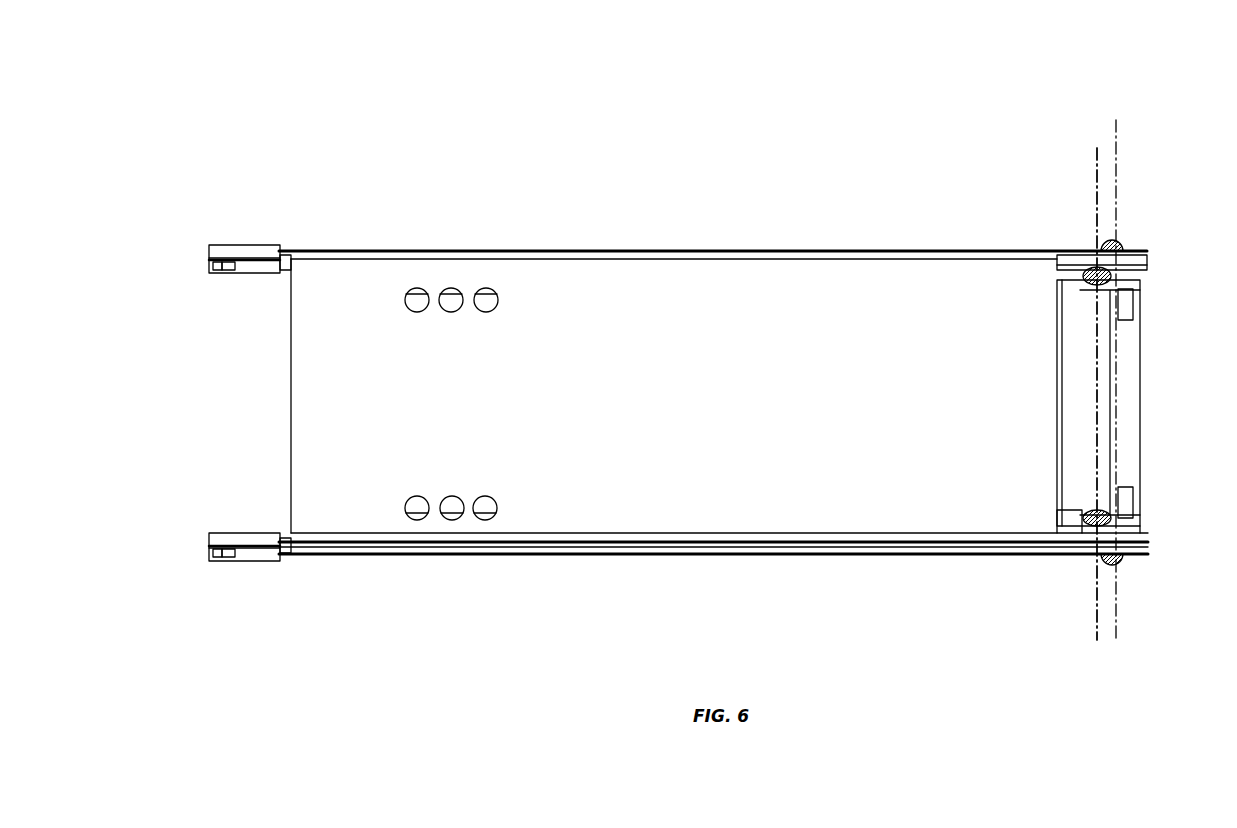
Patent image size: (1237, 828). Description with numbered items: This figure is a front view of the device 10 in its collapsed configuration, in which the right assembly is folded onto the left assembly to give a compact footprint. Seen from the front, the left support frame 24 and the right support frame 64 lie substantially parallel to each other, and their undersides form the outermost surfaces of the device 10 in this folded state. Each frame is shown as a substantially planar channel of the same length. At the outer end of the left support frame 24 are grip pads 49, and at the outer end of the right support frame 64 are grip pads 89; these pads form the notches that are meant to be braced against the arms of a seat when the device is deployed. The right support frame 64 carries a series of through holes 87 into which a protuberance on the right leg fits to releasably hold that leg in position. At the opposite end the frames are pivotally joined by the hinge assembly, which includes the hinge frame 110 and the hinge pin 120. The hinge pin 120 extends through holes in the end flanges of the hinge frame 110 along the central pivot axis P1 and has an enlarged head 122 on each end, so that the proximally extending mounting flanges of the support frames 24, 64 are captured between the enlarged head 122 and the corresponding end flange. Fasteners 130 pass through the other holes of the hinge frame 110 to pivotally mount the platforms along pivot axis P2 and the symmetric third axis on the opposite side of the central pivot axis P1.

The device 10 is at (915, 80).
The left support frame 24 is at (702, 552).
The grip pads 49 is at (252, 274).
The right support frame 64 is at (702, 345).
The through holes 87 is at (450, 492).
The grip pads 89 is at (237, 252).
The hinge frame 110 is at (1141, 352).
The hinge pin 120 is at (1135, 510).
The enlarged head 122 is at (1128, 563).
The fasteners 130 is at (1070, 248).
The central pivot axis P1 is at (1117, 140).
The pivot axis P2 is at (1095, 173).